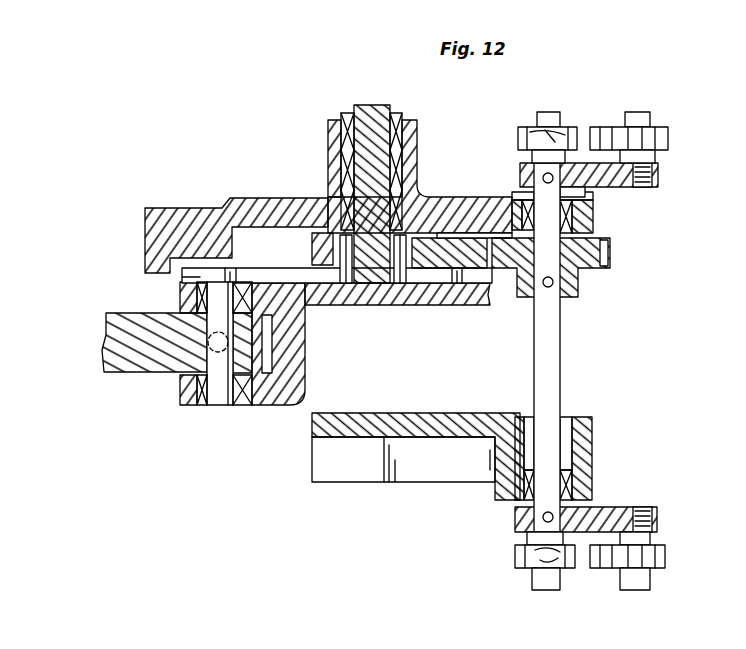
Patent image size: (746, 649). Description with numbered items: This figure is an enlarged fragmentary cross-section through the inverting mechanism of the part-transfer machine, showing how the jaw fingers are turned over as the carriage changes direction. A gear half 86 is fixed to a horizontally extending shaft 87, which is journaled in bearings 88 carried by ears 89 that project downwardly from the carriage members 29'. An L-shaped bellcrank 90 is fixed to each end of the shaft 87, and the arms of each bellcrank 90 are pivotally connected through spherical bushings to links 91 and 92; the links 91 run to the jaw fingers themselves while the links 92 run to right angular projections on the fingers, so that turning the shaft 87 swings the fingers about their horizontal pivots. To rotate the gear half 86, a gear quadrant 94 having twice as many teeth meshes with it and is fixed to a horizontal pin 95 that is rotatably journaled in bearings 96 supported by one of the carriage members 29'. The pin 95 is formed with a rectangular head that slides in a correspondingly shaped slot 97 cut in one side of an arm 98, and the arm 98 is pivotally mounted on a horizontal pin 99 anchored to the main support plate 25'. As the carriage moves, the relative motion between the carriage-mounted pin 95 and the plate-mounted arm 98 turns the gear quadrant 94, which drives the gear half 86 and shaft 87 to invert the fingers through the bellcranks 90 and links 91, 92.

The main support plate 25' is at (146, 343).
The carriage member 29' is at (320, 337).
The gear half 86 is at (592, 268).
The shaft 87 is at (562, 358).
The bearing 88 is at (593, 212).
The ear 89 is at (482, 218).
The bellcrank 90 is at (660, 175).
The link 91 is at (604, 128).
The link 92 is at (534, 128).
The gear quadrant 94 is at (437, 238).
The pin 95 is at (374, 110).
The bearing 96 is at (402, 142).
The slot 97 is at (305, 275).
The arm 98 is at (418, 305).
The pin 99 is at (213, 407).